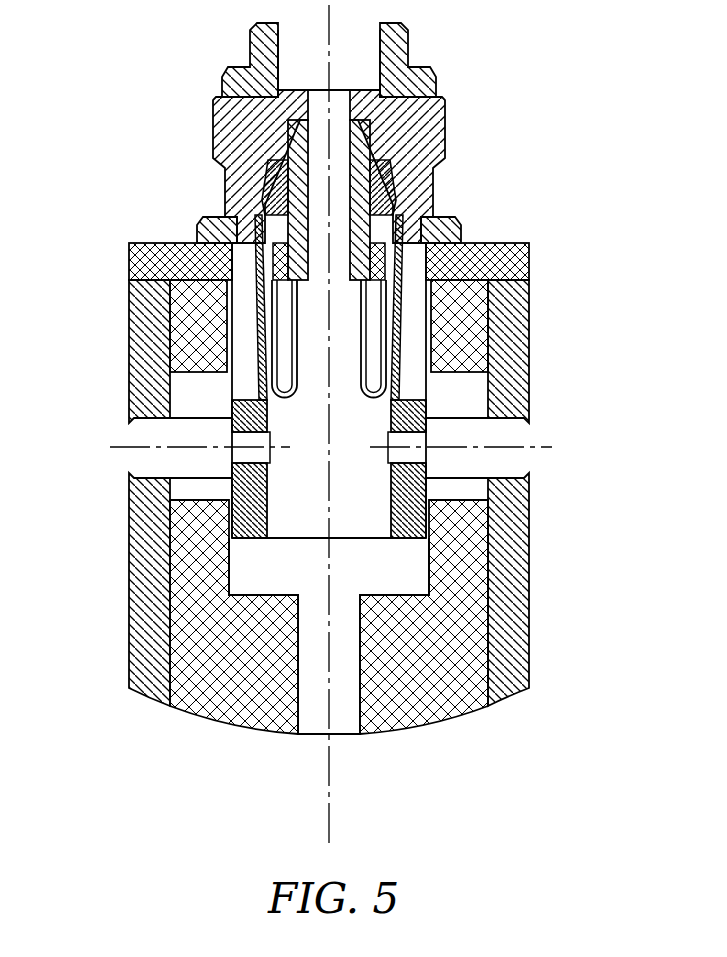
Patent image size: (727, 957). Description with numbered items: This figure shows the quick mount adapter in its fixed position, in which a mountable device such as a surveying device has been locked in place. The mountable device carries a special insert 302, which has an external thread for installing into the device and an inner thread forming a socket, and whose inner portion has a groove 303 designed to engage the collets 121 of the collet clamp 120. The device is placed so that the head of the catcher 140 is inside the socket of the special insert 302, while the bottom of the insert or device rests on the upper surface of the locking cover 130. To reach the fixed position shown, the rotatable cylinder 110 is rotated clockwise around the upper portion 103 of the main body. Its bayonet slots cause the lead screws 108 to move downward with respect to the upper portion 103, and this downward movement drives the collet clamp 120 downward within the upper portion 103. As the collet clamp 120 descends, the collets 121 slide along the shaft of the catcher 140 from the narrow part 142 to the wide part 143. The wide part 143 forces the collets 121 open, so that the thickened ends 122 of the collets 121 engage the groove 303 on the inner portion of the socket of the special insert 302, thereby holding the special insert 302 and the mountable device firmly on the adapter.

The upper portion 103 is at (447, 662).
The lead screws 108 is at (147, 441).
The rotatable cylinder 110 is at (512, 560).
The collet clamp 120 is at (243, 514).
The collets 121 is at (430, 192).
The thickened ends 122 is at (265, 162).
The locking cover 130 is at (520, 264).
The catcher 140 is at (263, 45).
The narrow part 142 is at (302, 115).
The wide part 143 is at (352, 142).
The special insert 302 is at (432, 112).
The groove 303 is at (260, 228).